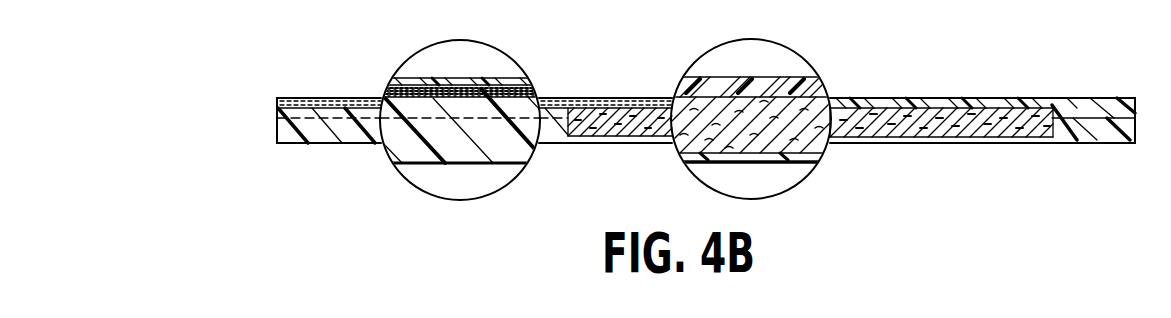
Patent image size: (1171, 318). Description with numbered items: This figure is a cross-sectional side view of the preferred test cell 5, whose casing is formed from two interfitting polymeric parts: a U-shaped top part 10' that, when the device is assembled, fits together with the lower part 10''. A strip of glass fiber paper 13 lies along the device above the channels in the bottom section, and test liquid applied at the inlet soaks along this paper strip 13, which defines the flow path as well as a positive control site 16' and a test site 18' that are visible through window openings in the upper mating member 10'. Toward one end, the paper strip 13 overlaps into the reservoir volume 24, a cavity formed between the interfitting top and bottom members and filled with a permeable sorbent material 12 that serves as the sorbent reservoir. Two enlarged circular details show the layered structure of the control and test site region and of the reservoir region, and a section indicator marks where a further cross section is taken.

The test cell 5 is at (328, 96).
The top part 10' is at (706, 105).
The lower part 10'' is at (272, 143).
The sorbent material 12 is at (725, 130).
The glass fiber paper strip 13 is at (299, 97).
The positive control site 16' is at (460, 54).
The test site 18' is at (462, 56).
The reservoir volume 24 is at (612, 98).